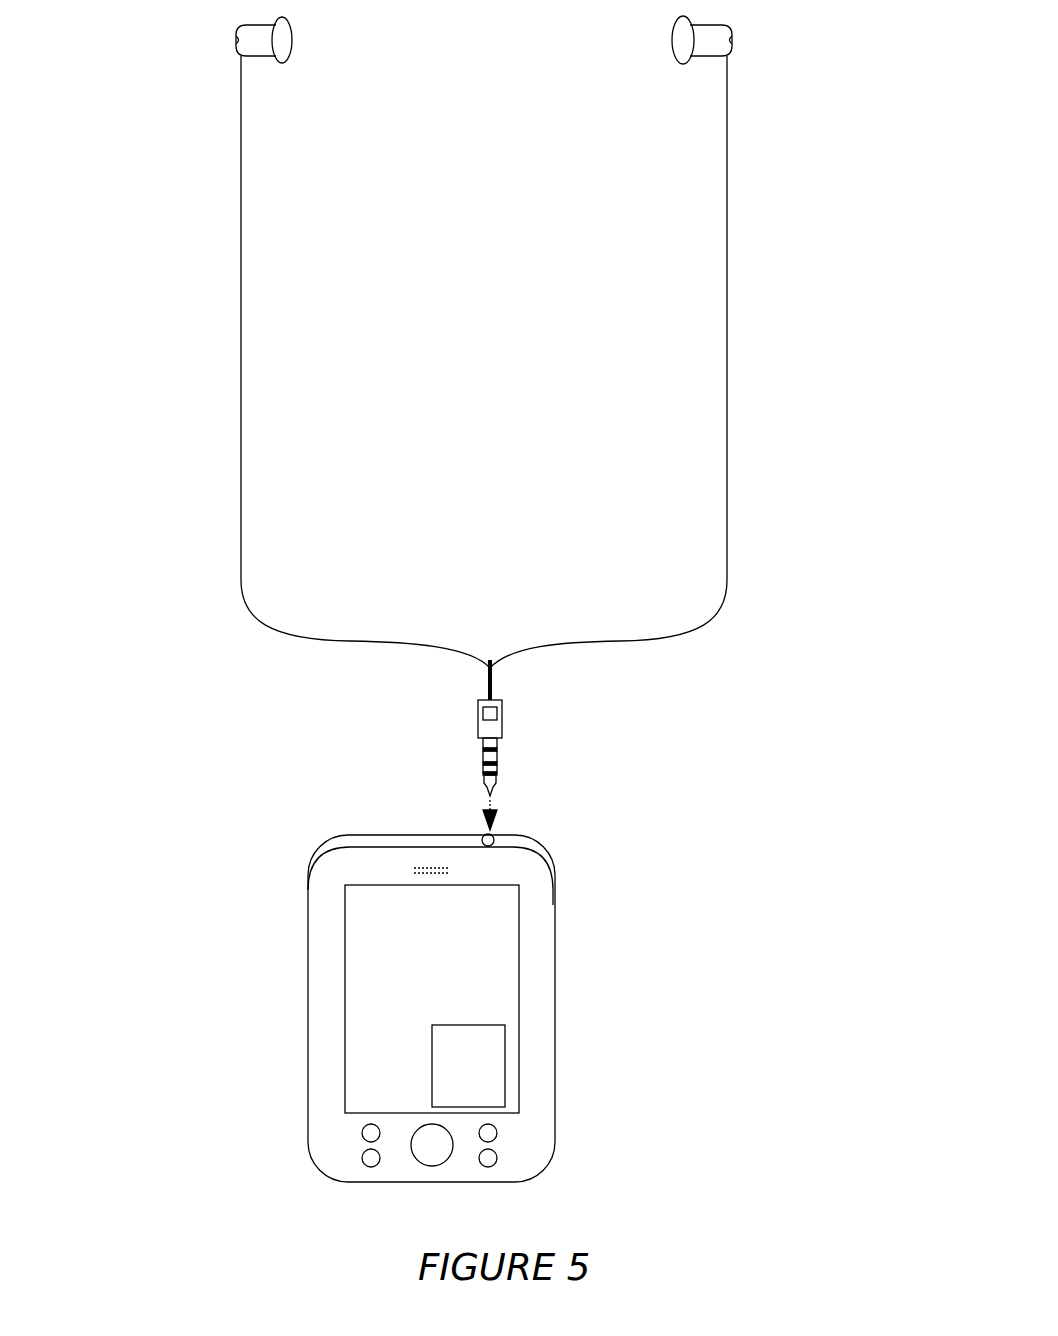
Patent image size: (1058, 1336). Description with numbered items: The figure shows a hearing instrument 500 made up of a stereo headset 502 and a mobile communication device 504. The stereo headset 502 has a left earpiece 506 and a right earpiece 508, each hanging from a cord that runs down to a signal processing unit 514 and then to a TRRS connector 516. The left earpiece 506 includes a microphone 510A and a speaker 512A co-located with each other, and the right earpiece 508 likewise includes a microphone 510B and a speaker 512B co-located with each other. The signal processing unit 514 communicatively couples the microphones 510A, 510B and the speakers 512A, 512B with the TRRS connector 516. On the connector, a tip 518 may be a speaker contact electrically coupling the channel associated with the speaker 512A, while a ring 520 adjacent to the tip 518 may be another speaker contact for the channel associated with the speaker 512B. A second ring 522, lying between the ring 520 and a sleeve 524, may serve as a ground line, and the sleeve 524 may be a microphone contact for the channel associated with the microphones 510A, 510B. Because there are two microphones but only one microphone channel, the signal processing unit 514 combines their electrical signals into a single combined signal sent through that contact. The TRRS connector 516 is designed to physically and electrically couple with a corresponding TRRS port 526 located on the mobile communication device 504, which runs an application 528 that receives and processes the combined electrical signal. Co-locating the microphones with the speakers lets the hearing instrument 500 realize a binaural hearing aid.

The hearing instrument 500 is at (686, 1110).
The stereo headset 502 is at (265, 670).
The mobile communication device 504 is at (538, 931).
The left earpiece 506 is at (258, 57).
The right earpiece 508 is at (708, 57).
The microphone 510A is at (236, 40).
The microphone 510B is at (732, 40).
The speaker 512A is at (290, 26).
The speaker 512B is at (676, 26).
The signal processing unit 514 is at (478, 708).
The TRRS connector 516 is at (503, 702).
The tip 518 is at (496, 788).
The ring 520 is at (497, 769).
The second ring 522 is at (497, 756).
The sleeve 524 is at (497, 742).
The TRRS port 526 is at (482, 836).
The application 528 is at (497, 1083).